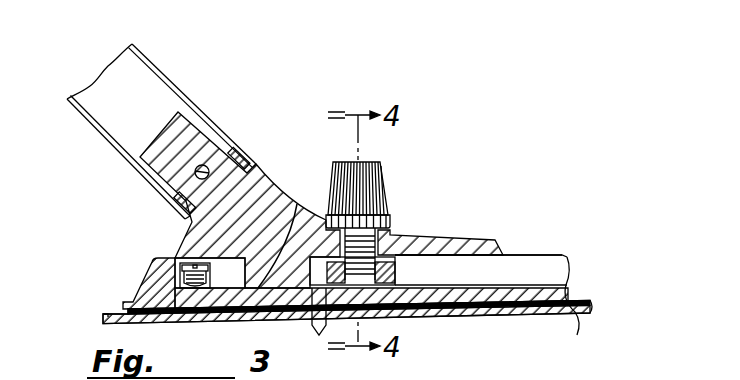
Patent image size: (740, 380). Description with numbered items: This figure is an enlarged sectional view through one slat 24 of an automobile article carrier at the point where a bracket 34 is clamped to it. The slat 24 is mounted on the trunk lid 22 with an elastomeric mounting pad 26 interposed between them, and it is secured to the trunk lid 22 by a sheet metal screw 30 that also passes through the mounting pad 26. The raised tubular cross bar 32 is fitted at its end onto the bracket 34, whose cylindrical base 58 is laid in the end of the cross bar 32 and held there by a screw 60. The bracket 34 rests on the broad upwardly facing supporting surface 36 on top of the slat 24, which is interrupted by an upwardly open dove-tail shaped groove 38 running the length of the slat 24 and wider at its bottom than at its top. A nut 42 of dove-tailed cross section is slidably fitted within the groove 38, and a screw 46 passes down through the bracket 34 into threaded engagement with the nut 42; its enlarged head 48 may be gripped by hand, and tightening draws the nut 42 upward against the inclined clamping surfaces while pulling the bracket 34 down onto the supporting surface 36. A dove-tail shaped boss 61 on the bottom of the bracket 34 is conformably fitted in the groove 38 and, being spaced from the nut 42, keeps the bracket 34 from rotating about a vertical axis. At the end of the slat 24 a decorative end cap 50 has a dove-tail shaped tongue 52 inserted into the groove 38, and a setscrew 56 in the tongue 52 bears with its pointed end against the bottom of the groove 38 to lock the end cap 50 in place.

The trunk lid 22 is at (577, 335).
The slat 24 is at (562, 293).
The elastomeric mounting pad 26 is at (590, 303).
The sheet metal screw 30 is at (313, 318).
The tubular cross bar 32 is at (170, 77).
The bracket 34 is at (238, 137).
The supporting surface 36 is at (557, 253).
The dove-tail shaped groove 38 is at (513, 270).
The nut 42 is at (397, 282).
The screw 46 is at (378, 246).
The enlarged head 48 is at (380, 190).
The decorative end cap 50 is at (148, 279).
The dove-tail shaped tongue 52 is at (208, 318).
The setscrew 56 is at (206, 322).
The cylindrical base 58 is at (160, 163).
The screw 60 is at (195, 176).
The dove-tail shaped boss 61 is at (297, 204).